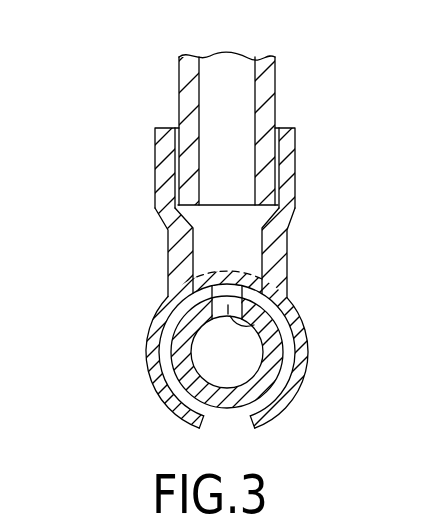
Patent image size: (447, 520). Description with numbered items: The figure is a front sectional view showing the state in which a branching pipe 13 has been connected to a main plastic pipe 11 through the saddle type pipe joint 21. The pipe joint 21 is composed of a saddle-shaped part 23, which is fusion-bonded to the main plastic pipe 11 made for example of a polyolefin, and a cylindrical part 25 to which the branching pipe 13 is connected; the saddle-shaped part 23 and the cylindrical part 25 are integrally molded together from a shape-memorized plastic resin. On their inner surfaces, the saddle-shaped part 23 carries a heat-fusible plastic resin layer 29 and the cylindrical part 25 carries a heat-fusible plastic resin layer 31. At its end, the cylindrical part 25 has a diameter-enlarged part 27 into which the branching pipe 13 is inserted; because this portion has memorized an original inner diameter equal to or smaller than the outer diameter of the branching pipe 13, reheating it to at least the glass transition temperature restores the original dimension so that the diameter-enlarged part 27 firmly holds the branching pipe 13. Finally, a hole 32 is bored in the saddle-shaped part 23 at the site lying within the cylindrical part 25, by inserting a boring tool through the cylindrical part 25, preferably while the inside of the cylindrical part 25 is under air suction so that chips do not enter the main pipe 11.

The pipe joint 21 is at (122, 233).
The branching pipe 13 is at (277, 86).
The heat-fusible plastic resin layer 31 is at (296, 157).
The diameter-enlarged part 27 is at (284, 185).
The cylindrical part 25 is at (292, 252).
The saddle-shaped part 23 is at (300, 363).
The heat-fusible plastic resin layer 29 is at (284, 400).
The hole 32 is at (273, 315).
The main plastic pipe 11 is at (165, 380).